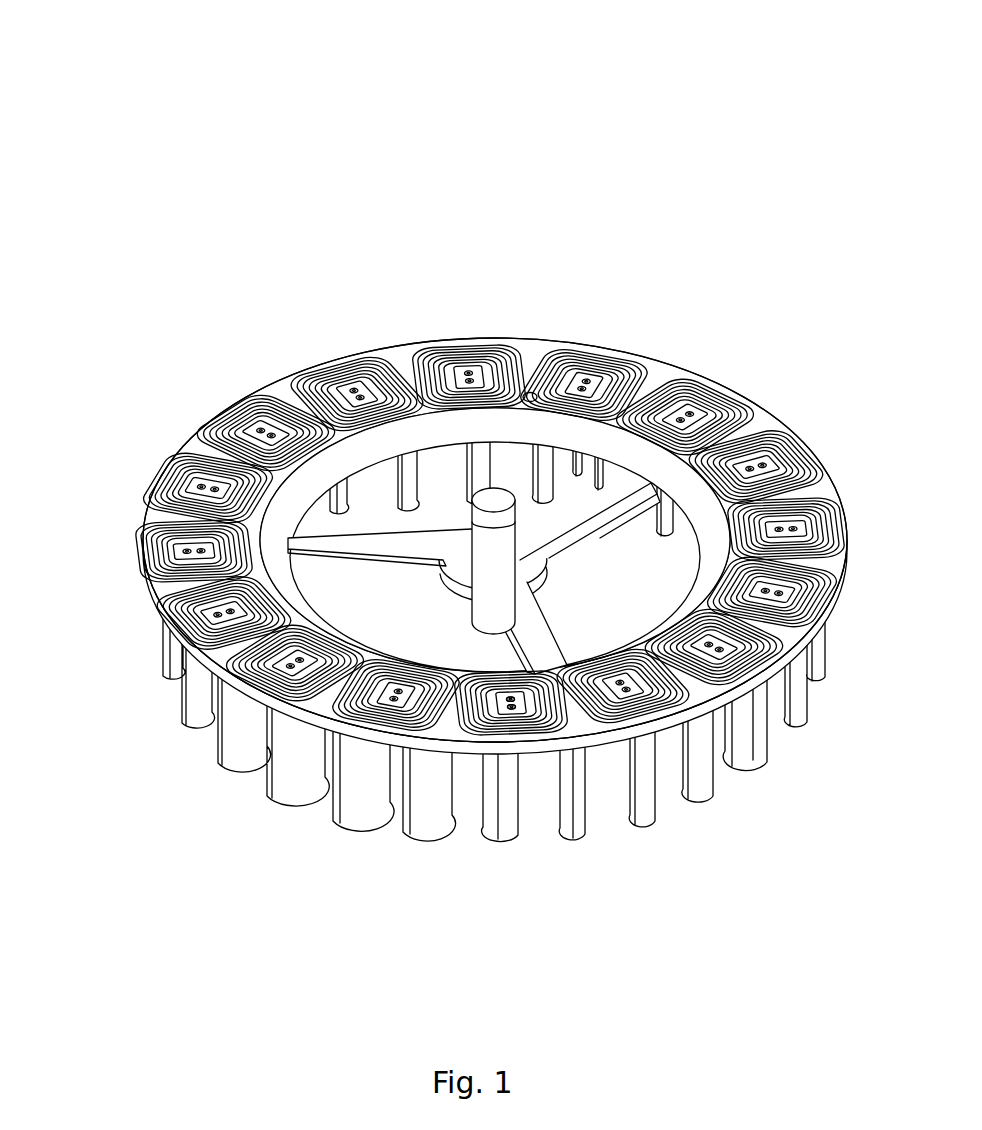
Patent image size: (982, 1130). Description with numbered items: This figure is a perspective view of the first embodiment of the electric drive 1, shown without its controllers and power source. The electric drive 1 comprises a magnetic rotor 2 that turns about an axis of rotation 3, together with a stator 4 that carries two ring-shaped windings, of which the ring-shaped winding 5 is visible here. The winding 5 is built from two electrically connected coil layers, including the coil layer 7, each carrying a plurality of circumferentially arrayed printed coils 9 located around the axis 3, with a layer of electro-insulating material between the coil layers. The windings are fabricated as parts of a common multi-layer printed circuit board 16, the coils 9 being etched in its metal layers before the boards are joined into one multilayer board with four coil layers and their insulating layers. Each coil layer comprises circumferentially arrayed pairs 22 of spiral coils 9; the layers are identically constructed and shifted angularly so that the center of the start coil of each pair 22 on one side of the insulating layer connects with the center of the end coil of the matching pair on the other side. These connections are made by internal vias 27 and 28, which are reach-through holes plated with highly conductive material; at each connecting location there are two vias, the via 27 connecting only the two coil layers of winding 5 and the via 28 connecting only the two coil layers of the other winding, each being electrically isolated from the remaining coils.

The electric drive 1 is at (266, 107).
The magnetic rotor 2 is at (328, 858).
The axis of rotation 3 is at (472, 524).
The stator 4 is at (451, 312).
The ring-shaped winding 5 is at (495, 540).
The coil layer 7 is at (647, 366).
The printed coil 9 is at (223, 412).
The common multi-layer printed circuit board 16 is at (213, 667).
The pairs of spiral coils 22 is at (440, 363).
The internal via 27 is at (520, 712).
The internal via 28 is at (512, 710).